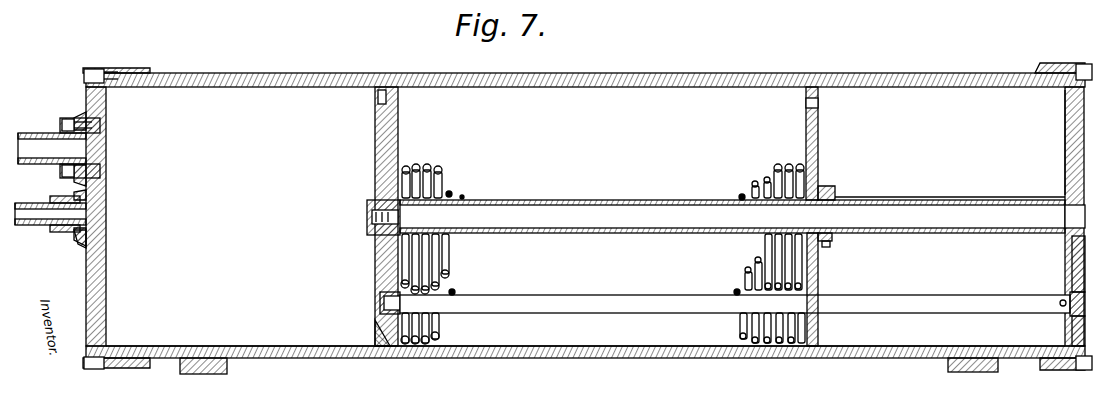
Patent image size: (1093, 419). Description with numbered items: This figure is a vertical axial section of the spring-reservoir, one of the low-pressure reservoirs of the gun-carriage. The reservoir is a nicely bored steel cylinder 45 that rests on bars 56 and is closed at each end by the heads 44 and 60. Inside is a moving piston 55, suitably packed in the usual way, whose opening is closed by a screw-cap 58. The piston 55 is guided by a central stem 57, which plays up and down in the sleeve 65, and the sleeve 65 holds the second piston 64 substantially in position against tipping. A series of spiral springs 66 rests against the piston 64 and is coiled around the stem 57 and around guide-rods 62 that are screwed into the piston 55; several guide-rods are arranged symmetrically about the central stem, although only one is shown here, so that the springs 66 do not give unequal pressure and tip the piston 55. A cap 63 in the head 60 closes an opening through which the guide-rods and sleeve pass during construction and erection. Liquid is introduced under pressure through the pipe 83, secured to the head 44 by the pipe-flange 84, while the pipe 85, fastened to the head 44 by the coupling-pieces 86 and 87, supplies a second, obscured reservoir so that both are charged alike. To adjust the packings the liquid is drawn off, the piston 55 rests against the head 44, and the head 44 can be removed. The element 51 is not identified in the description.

The head 44 is at (92, 240).
The pressure-reservoir cylinder 45 is at (585, 368).
The shaft bearing 51 is at (1082, 244).
The moving piston 55 is at (400, 138).
The bars 56 is at (589, 379).
The stem 57 is at (742, 203).
The screw-cap 58 is at (368, 206).
The head 60 is at (1042, 142).
The guide-rods 62 is at (742, 315).
The cap 63 is at (1078, 318).
The piston 64 is at (818, 162).
The sleeve 65 is at (950, 184).
The spiral springs 66 is at (447, 286).
The pipe 83 is at (52, 148).
The pipe-flange 84 is at (64, 132).
The pipe 85 is at (28, 227).
The coupling-piece 86 is at (62, 234).
The coupling-piece 87 is at (82, 240).